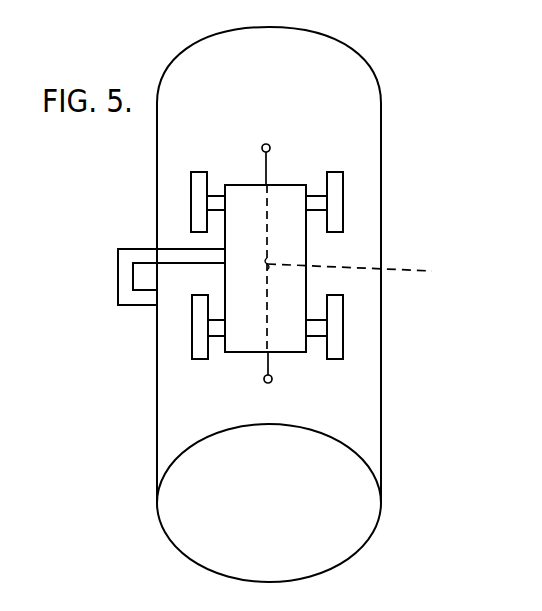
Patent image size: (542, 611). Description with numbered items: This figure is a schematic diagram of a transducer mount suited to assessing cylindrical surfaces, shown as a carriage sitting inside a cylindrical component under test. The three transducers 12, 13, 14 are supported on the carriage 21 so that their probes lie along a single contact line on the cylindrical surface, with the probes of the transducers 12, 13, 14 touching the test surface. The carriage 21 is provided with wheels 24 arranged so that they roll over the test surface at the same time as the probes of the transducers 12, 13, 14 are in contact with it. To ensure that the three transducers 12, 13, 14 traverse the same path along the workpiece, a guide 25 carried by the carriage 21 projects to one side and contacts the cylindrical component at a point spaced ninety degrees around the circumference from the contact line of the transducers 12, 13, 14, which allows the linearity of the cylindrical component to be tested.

The transducer 12 is at (268, 144).
The transducer 13 is at (360, 274).
The transducer 14 is at (272, 379).
The carriage 21 is at (296, 301).
The wheels 24 is at (195, 200).
The guide 25 is at (125, 284).